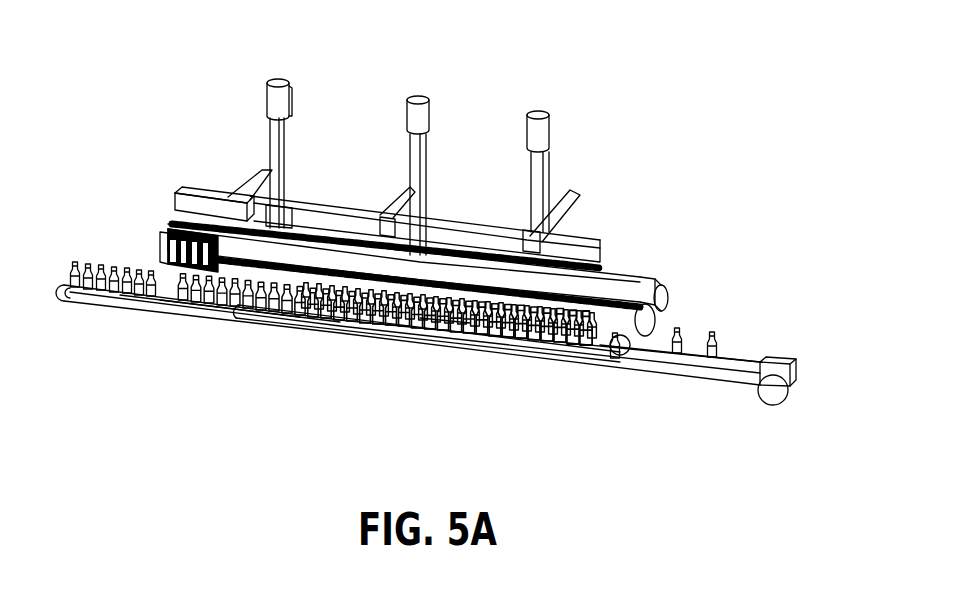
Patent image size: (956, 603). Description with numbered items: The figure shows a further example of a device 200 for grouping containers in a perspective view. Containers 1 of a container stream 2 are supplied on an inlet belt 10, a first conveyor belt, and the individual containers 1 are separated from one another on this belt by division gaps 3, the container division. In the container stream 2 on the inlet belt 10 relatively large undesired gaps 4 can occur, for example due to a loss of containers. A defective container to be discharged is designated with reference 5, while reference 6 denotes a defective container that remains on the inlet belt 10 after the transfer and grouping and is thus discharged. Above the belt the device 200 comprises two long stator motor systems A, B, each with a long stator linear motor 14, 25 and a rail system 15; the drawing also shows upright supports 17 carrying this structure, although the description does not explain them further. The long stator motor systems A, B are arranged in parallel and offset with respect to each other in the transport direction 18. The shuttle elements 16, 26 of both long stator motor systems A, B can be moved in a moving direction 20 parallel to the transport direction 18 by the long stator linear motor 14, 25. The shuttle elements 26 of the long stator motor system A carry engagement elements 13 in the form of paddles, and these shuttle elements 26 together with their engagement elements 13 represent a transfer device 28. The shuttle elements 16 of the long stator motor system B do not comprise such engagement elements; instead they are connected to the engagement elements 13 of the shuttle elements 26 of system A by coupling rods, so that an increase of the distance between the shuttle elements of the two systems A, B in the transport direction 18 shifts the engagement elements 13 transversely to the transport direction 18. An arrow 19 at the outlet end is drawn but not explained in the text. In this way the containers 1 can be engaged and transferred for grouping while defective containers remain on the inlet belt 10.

The device for grouping containers 200 is at (383, 208).
The containers 1 is at (108, 248).
The container stream 2 is at (98, 258).
The division gaps 3 is at (130, 298).
The undesired gaps 4 is at (170, 283).
The defective container to be discharged 5 is at (233, 310).
The defective container remaining on the inlet belt 6 is at (670, 355).
The inlet belt 10 is at (73, 305).
The engagement elements 13 is at (168, 235).
The long stator linear motor 14 is at (382, 190).
The rail system 15 is at (197, 190).
The shuttle elements 16 is at (443, 327).
The vertical posts 17 is at (277, 80).
The transport direction 18 is at (400, 375).
The discharge direction 19 is at (683, 310).
The moving direction 20 is at (400, 185).
The long stator linear motor 25 is at (617, 265).
The shuttle elements 26 is at (168, 228).
The transfer device 28 is at (158, 244).
The long stator motor system A is at (222, 197).
The long stator motor system B is at (647, 277).